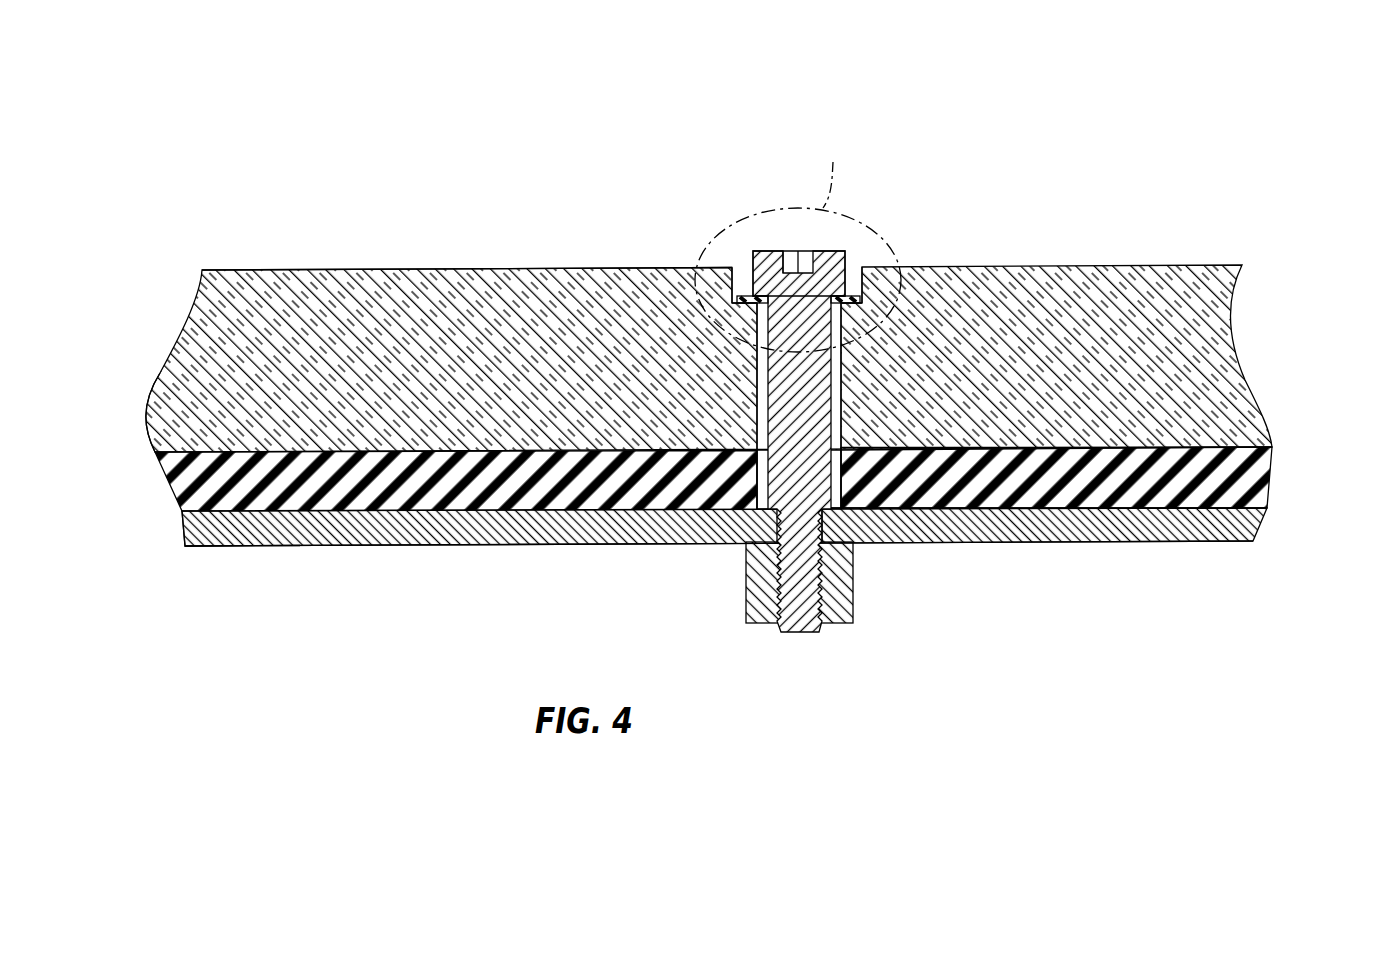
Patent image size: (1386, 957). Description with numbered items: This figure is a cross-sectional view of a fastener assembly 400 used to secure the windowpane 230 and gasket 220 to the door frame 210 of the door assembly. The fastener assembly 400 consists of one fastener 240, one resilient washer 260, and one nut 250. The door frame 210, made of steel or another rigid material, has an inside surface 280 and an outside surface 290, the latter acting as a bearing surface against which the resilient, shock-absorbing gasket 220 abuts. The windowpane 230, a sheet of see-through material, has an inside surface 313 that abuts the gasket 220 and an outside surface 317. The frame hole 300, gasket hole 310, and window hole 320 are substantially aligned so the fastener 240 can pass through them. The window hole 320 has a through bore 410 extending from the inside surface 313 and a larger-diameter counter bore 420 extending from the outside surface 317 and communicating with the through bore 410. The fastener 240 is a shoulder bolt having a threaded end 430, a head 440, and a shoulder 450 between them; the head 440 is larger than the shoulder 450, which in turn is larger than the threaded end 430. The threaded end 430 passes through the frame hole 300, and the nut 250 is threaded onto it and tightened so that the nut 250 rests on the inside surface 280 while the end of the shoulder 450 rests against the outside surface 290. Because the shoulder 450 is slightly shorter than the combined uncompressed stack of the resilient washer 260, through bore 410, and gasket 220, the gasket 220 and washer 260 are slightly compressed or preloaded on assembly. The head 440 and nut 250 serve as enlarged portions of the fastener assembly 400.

The fastener assembly 400 is at (1088, 89).
The door frame 210 is at (1265, 515).
The gasket 220 is at (1278, 460).
The windowpane 230 is at (1223, 367).
The fastener 240 is at (843, 373).
The nut 250 is at (760, 592).
The resilient washer 260 is at (855, 293).
The inside surface 280 is at (292, 548).
The outside surface 290 is at (208, 517).
The frame hole 300 is at (835, 522).
The gasket hole 310 is at (940, 517).
The window hole 320 is at (853, 388).
The inside surface 313 is at (177, 450).
The outside surface 317 is at (233, 270).
The through bore 410 is at (752, 365).
The counter bore 420 is at (750, 265).
The threaded end 430 is at (805, 630).
The head 440 is at (765, 377).
The shoulder 450 is at (783, 445).